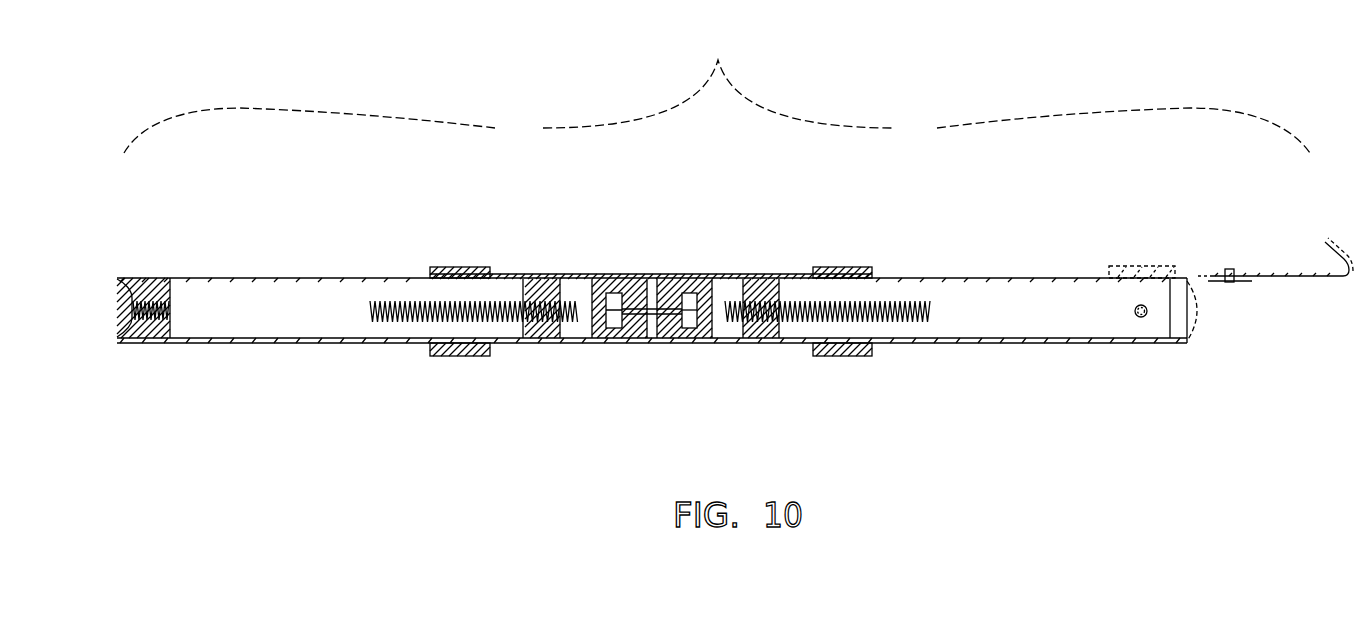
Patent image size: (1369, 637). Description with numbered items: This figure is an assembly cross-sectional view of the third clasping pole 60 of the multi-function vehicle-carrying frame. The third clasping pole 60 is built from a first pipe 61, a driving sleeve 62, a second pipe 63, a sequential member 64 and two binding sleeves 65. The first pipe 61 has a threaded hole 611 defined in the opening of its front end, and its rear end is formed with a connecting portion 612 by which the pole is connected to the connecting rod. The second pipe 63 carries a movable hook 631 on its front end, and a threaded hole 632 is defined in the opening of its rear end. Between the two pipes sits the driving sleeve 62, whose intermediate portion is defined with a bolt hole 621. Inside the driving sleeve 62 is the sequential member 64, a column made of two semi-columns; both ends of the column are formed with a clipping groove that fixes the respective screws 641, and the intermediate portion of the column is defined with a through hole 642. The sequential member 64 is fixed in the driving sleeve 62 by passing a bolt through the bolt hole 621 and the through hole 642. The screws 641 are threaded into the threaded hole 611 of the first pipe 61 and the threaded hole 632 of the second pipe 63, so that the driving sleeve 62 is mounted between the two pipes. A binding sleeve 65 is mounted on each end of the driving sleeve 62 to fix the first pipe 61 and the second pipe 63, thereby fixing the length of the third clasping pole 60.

The third clasping pole 60 is at (717, 94).
The first pipe 61 is at (311, 278).
The connecting portion 612 is at (125, 333).
The binding sleeve 65 is at (848, 267).
The screw 641 is at (880, 322).
The threaded hole 611 is at (545, 325).
The sequential member 64 is at (637, 311).
The through hole 642 is at (634, 296).
The bolt hole 621 is at (657, 280).
The driving sleeve 62 is at (757, 313).
The threaded hole 632 is at (757, 305).
The second pipe 63 is at (1072, 344).
The movable hook 631 is at (1255, 280).